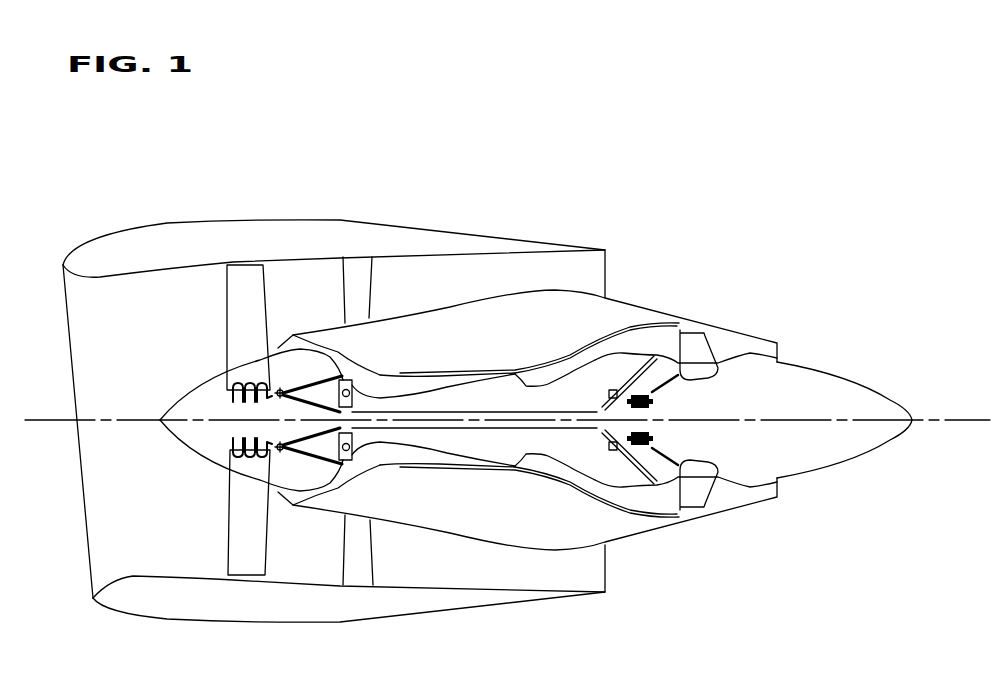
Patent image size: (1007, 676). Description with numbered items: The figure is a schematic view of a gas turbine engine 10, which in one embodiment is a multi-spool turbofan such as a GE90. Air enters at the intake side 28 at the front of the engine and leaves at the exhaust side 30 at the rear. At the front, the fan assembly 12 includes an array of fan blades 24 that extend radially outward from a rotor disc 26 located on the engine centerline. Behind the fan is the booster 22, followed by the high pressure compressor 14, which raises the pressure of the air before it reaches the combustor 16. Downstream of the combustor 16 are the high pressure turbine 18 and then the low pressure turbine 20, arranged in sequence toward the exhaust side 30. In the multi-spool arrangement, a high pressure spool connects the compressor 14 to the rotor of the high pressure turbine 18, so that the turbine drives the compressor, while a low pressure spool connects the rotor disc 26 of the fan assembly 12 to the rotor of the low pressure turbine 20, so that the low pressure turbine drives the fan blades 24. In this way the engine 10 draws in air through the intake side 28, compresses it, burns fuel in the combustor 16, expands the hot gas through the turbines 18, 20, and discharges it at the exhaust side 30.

The gas turbine engine 10 is at (532, 211).
The fan assembly 12 is at (236, 518).
The high pressure compressor 14 is at (400, 380).
The combustor 16 is at (527, 380).
The high pressure turbine 18 is at (568, 481).
The low pressure turbine 20 is at (627, 335).
The booster 22 is at (327, 344).
The fan blades 24 is at (243, 307).
The rotor disc 26 is at (205, 447).
The intake side 28 is at (47, 315).
The exhaust side 30 is at (641, 270).